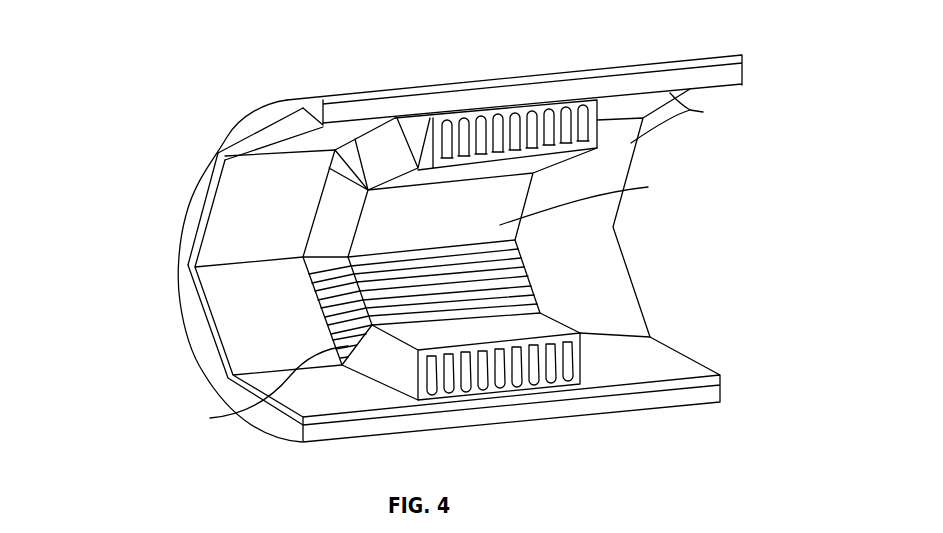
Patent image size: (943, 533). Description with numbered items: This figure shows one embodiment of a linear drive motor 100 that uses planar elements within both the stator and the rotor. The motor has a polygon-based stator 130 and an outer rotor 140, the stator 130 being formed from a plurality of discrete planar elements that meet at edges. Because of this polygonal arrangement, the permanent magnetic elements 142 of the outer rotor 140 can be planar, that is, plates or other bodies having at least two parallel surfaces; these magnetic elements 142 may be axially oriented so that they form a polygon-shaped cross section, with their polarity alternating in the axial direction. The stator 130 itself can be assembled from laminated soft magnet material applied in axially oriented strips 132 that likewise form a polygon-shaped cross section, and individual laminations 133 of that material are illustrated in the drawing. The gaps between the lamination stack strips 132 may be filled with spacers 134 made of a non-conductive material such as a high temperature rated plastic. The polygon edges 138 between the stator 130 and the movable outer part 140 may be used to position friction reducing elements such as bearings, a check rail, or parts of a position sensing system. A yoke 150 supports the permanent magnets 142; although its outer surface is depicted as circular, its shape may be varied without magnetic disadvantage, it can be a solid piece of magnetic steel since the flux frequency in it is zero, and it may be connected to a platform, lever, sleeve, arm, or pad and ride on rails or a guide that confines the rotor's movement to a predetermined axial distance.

The linear drive motor 100 is at (195, 58).
The outer rotor 140 is at (335, 96).
The yoke 150 is at (250, 127).
The polygon edges 138 is at (193, 265).
The permanent magnetic elements 142 is at (217, 293).
The spacers 134 is at (315, 247).
The stator 130 is at (598, 133).
The axially oriented strips 132 is at (528, 285).
The laminations 133 is at (532, 308).